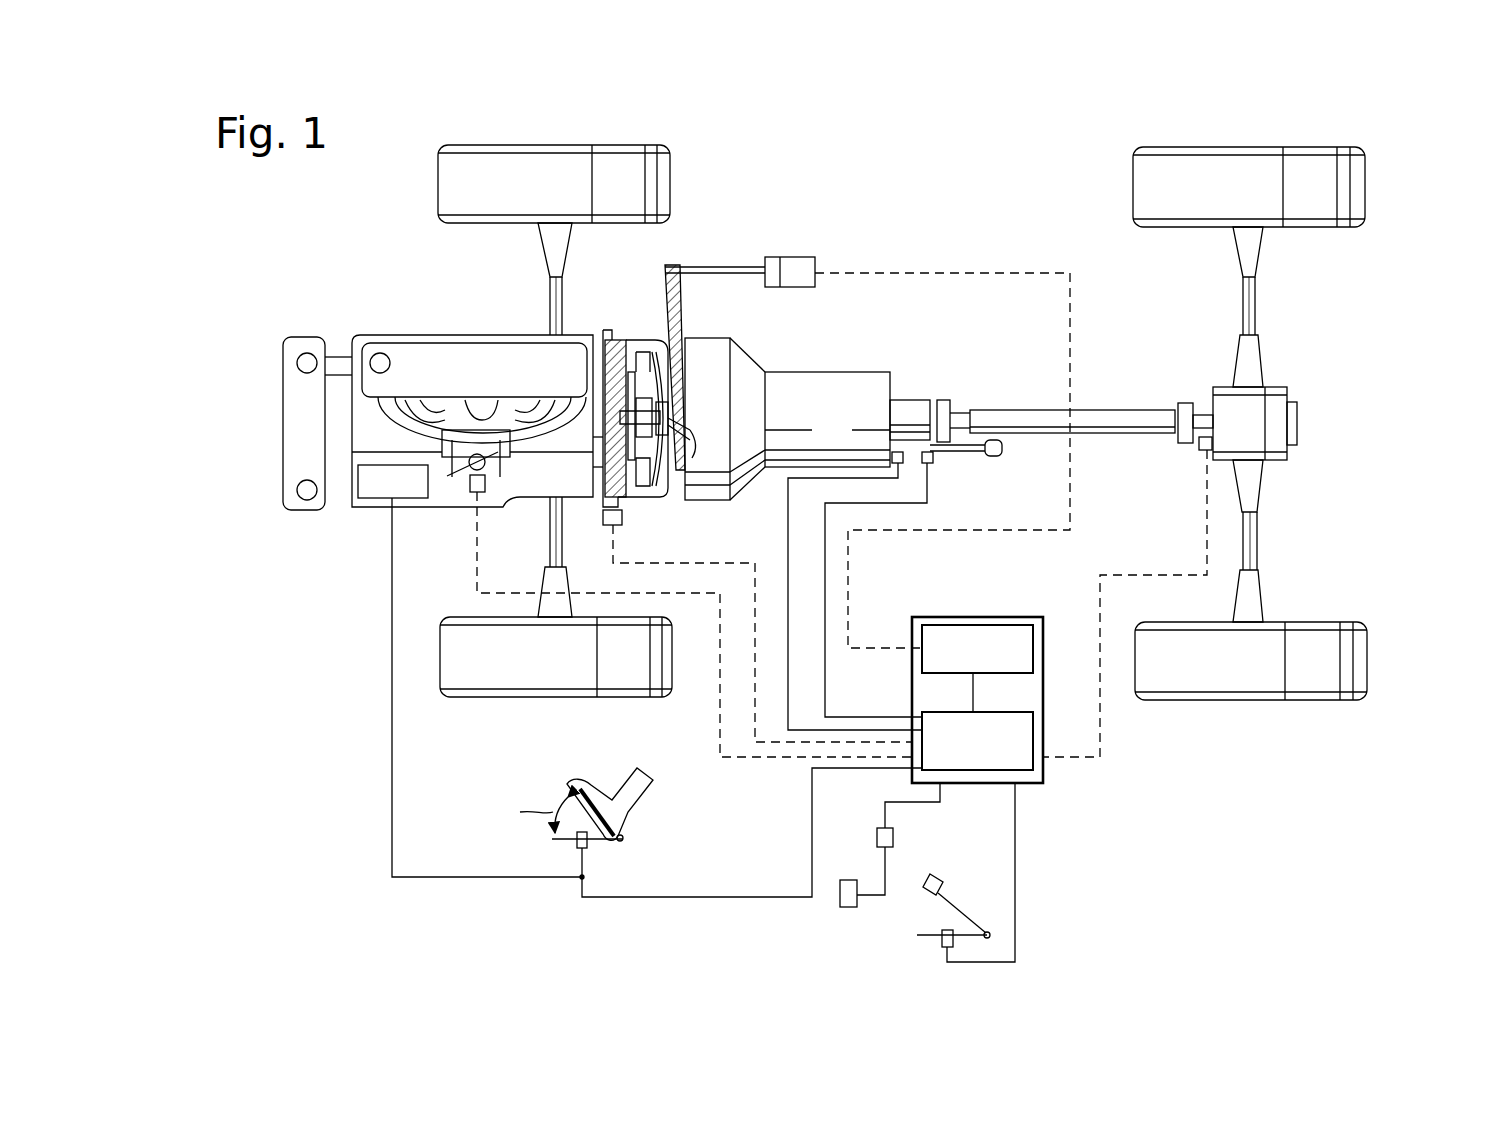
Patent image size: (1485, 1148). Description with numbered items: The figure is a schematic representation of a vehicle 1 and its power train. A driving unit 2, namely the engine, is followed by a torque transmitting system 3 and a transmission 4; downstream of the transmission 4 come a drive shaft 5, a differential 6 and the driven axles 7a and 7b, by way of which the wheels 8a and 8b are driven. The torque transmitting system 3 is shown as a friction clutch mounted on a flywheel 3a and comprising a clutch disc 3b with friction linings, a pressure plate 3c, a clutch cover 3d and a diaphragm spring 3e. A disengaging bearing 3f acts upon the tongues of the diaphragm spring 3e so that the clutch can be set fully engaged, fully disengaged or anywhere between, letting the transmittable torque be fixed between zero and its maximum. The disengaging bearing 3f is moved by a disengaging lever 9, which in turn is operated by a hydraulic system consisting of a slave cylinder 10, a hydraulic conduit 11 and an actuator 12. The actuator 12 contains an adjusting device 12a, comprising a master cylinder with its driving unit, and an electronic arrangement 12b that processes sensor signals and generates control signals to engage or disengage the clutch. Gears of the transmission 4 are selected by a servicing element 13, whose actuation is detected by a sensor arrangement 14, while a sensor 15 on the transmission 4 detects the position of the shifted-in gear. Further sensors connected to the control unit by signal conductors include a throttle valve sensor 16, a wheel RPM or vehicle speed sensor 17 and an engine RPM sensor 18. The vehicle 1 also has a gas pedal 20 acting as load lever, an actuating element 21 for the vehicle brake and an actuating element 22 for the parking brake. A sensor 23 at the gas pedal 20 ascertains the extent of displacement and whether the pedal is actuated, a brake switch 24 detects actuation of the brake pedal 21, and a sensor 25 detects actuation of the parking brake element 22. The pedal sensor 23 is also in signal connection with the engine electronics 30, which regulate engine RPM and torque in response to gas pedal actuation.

The vehicle 1 is at (941, 160).
The driving unit 2 is at (415, 355).
The torque transmitting system 3 is at (684, 417).
The flywheel 3a is at (624, 497).
The clutch disc 3b is at (641, 372).
The pressure plate 3c is at (641, 487).
The clutch cover 3d is at (660, 488).
The diaphragm spring 3e is at (667, 382).
The disengaging bearing 3f is at (690, 447).
The transmission 4 is at (843, 433).
The drive shaft 5 is at (1130, 410).
The differential 6 is at (1275, 420).
The driven axle 7a is at (1258, 305).
The driven axle 7b is at (1258, 543).
The wheel 8a is at (1330, 187).
The wheel 8b is at (1333, 662).
The disengaging lever 9 is at (676, 304).
The slave cylinder 10 is at (795, 258).
The hydraulic conduit 11 is at (884, 270).
The actuator 12 is at (977, 658).
The adjusting device 12a is at (1000, 663).
The electronic arrangement 12b is at (1000, 757).
The servicing element 13 is at (944, 440).
The sensor arrangement 14 is at (934, 461).
The sensor 15 is at (904, 463).
The throttle valve sensor 16 is at (470, 490).
The wheel RPM or velocity sensor 17 is at (1204, 450).
The engine RPM sensor 18 is at (610, 525).
The gas pedal 20 is at (610, 835).
The actuating element of a brake 21 is at (876, 870).
The actuating element for a parking brake 22 is at (934, 932).
The sensor 23 is at (590, 840).
The brake switch 24 is at (878, 836).
The sensor 25 is at (941, 940).
The engine electronics 30 is at (409, 495).